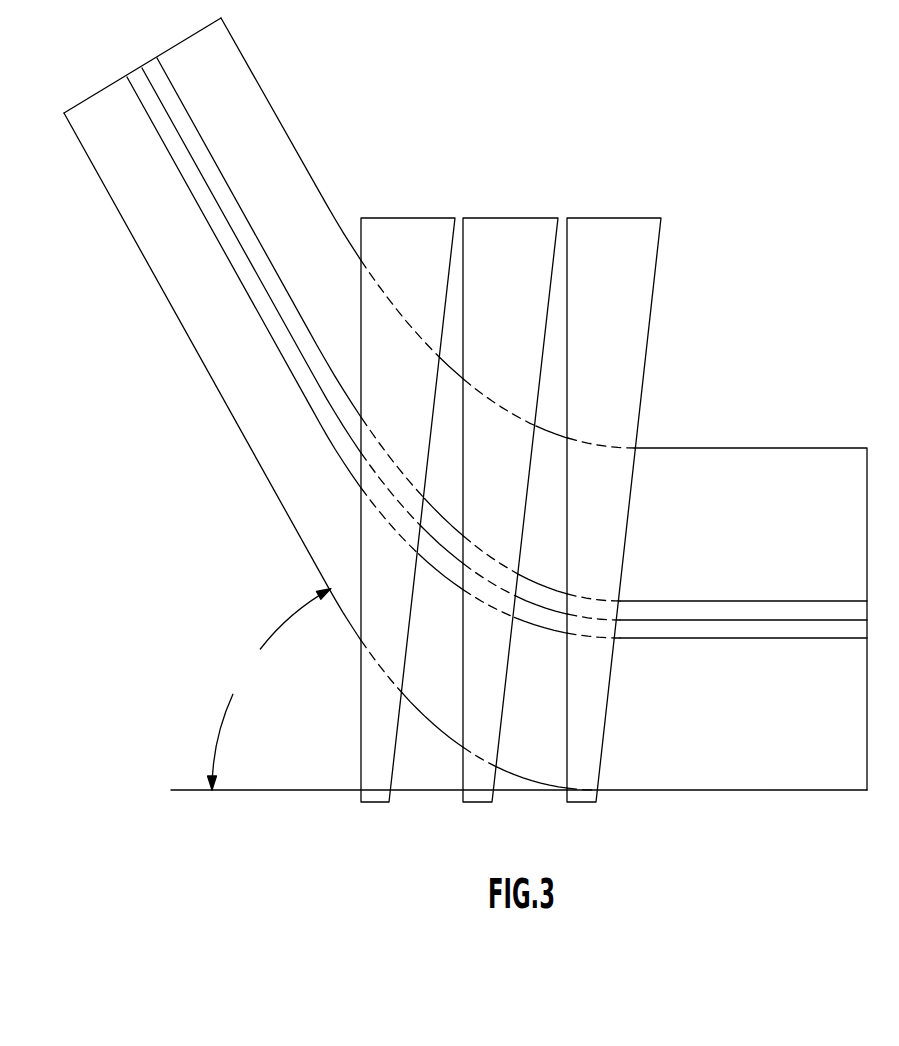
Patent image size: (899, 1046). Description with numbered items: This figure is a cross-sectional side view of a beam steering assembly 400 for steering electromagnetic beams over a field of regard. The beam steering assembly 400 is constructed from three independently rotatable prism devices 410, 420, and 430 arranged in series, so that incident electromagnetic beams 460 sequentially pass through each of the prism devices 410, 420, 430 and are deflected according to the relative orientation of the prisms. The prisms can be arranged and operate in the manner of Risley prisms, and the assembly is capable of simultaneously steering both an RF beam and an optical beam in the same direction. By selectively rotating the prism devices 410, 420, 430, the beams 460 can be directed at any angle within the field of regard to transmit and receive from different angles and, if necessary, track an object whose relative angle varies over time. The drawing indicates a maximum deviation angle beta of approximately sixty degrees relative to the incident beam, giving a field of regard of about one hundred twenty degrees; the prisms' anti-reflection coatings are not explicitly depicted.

The beam steering assembly 400 is at (465, 410).
The first prism device 410 is at (407, 229).
The second prism device 420 is at (505, 246).
The third prism device 430 is at (616, 246).
The incident electromagnetic beams 460 is at (218, 127).